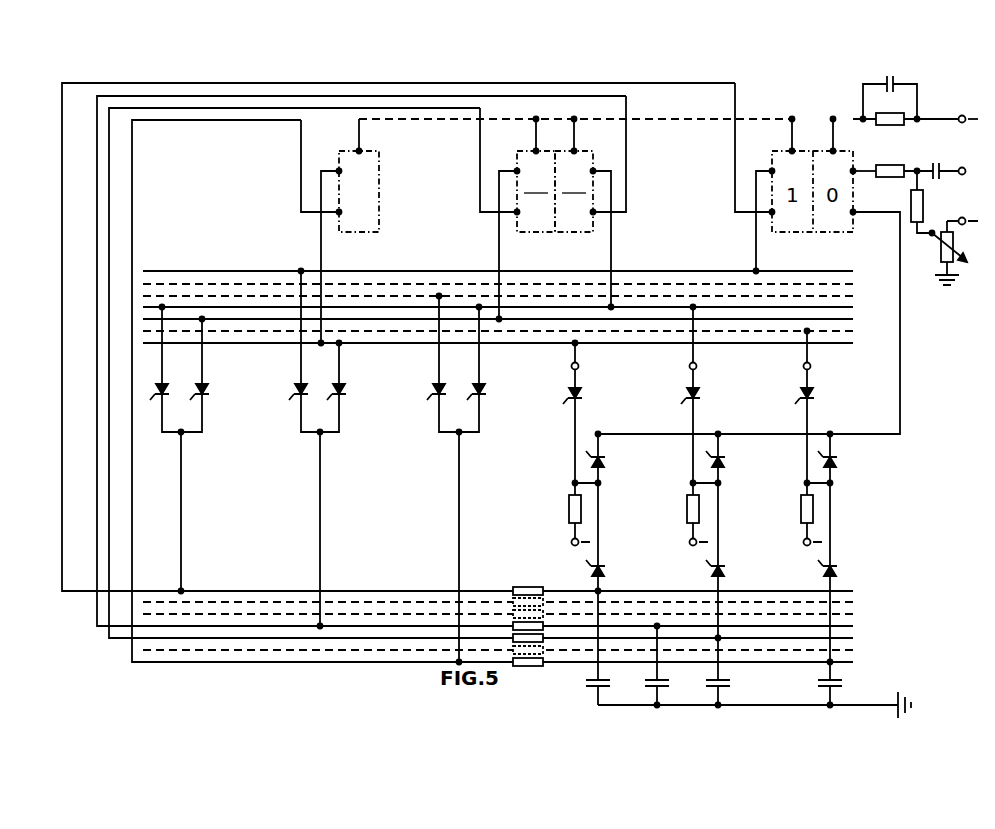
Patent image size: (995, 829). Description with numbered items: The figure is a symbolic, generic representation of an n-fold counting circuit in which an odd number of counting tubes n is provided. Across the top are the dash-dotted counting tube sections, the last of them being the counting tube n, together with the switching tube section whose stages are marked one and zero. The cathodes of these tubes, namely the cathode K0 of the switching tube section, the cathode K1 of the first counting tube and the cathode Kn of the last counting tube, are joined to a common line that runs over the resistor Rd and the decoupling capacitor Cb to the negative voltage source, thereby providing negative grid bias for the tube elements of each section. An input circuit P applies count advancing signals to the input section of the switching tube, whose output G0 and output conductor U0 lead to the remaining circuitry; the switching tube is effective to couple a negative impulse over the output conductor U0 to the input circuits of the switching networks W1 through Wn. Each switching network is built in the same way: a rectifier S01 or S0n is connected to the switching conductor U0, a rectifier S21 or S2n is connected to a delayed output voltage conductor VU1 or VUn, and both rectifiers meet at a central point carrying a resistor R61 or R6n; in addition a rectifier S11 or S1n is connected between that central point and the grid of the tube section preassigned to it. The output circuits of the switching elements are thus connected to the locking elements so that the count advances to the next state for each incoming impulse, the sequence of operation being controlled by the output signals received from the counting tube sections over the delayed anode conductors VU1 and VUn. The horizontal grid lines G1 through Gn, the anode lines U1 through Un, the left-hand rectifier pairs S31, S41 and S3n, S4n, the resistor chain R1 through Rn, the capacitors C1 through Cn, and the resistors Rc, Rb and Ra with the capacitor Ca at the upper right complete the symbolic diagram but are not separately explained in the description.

The input voltage line U1 is at (447, 344).
The input voltage line Un is at (486, 400).
The delayed anode conductor VU1 is at (741, 592).
The delayed anode conductor VUn is at (857, 665).
The gate line G1 is at (509, 272).
The gate line Gn is at (509, 346).
The gate output G0 is at (864, 163).
The output conductor U0 is at (759, 328).
The counting tube n is at (359, 191).
The cathode Kn is at (367, 136).
The cathode K1 is at (800, 135).
The cathode K0 is at (841, 135).
The decoupling capacitor Cb is at (890, 88).
The resistor Rd is at (915, 129).
The resistor Rc is at (898, 181).
The capacitor Ca is at (937, 161).
The input circuit P is at (968, 172).
The resistor Rb is at (927, 202).
The potentiometer Ra is at (954, 252).
The thyristor S31 is at (159, 369).
The thyristor S41 is at (206, 455).
The thyristor S3n is at (434, 363).
The thyristor S4n is at (484, 485).
The switching network W1 is at (566, 412).
The switching network Wn is at (819, 406).
The rectifier S11 is at (565, 397).
The rectifier S1n is at (796, 397).
The rectifier S01 is at (602, 512).
The rectifier S0n is at (834, 547).
The resistor R61 is at (568, 513).
The resistor R6n is at (799, 513).
The rectifier S21 is at (608, 576).
The rectifier S2n is at (839, 612).
The capacitor C1 is at (603, 648).
The capacitor Cn is at (835, 683).
The resistor R1 is at (528, 582).
The resistor Rn is at (528, 672).